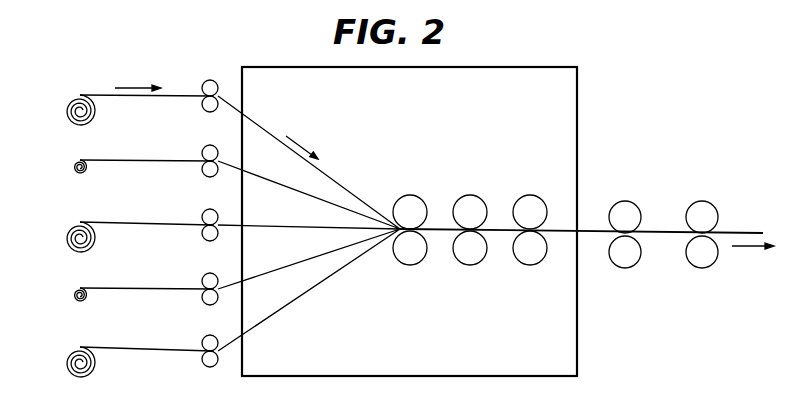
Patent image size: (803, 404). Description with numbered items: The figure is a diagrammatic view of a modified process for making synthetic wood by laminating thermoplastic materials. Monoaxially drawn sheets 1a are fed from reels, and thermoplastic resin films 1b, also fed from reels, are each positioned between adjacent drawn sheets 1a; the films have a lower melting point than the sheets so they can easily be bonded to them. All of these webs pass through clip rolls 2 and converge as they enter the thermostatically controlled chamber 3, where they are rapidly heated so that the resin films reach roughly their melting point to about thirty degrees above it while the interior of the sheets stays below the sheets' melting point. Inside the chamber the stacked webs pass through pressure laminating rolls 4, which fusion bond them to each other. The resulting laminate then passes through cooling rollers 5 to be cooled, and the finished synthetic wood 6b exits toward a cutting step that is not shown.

The monoaxially drawn sheets 1a is at (64, 110).
The thermoplastic resin films 1b is at (73, 167).
The clip rolls 2 is at (205, 86).
The thermostatically controlled chamber 3 is at (584, 314).
The pressure laminating rolls 4 is at (527, 205).
The cooling rollers 5 is at (697, 208).
The laminated web 6b is at (723, 236).